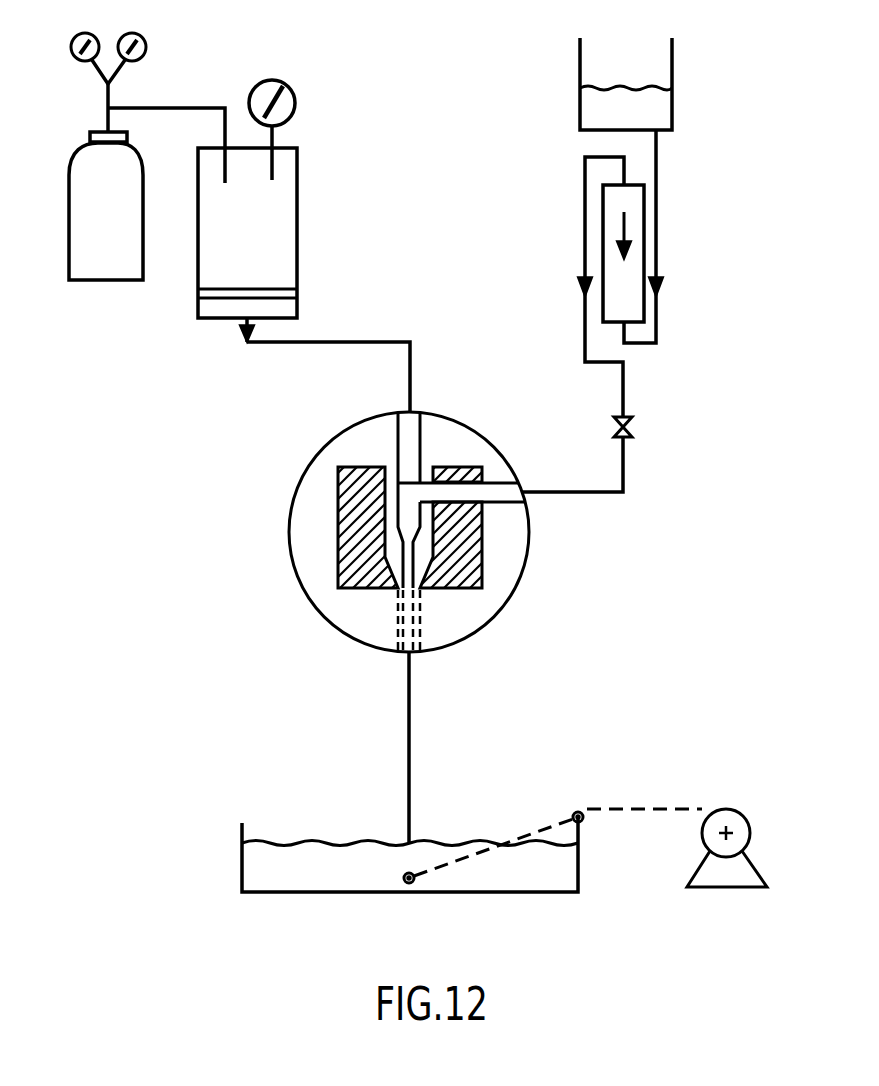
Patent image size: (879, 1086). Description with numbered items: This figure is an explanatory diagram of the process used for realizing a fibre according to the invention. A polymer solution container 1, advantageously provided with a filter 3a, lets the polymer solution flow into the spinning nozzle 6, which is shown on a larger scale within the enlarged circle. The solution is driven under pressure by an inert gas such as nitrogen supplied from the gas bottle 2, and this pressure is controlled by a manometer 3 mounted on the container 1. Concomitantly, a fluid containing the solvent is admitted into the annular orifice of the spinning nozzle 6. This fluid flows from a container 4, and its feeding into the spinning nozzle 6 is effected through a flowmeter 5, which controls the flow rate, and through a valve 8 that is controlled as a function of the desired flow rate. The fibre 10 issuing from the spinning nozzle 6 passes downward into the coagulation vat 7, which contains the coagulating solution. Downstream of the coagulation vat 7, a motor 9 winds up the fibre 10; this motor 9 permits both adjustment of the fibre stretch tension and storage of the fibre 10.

The polymer solution container 1 is at (239, 238).
The gas bottle 2 is at (98, 238).
The manometer 3 is at (295, 103).
The filter 3a is at (286, 294).
The container 4 is at (580, 108).
The flowmeter 5 is at (616, 305).
The spinning nozzle 6 is at (289, 537).
The coagulation vat 7 is at (240, 858).
The valve 8 is at (632, 427).
The motor 9 is at (703, 845).
The fibre 10 is at (411, 738).